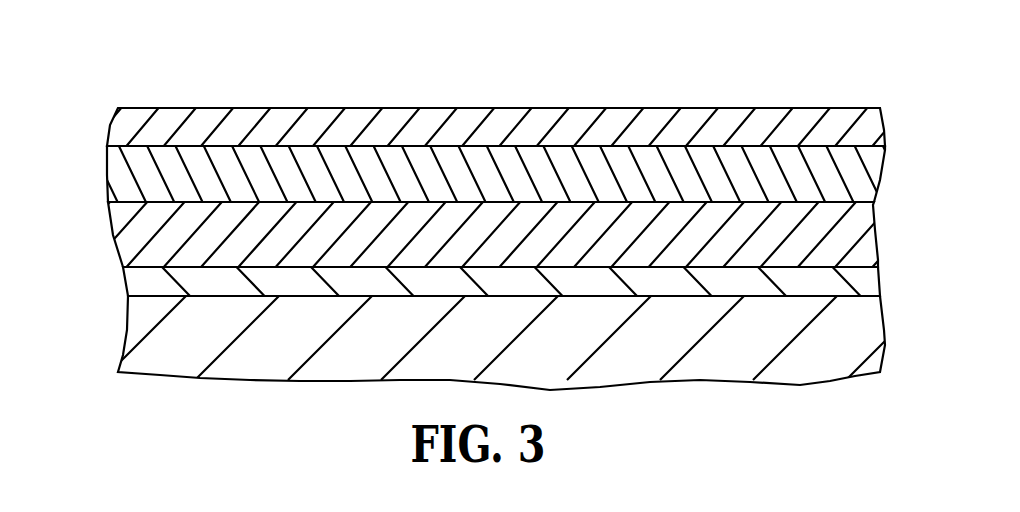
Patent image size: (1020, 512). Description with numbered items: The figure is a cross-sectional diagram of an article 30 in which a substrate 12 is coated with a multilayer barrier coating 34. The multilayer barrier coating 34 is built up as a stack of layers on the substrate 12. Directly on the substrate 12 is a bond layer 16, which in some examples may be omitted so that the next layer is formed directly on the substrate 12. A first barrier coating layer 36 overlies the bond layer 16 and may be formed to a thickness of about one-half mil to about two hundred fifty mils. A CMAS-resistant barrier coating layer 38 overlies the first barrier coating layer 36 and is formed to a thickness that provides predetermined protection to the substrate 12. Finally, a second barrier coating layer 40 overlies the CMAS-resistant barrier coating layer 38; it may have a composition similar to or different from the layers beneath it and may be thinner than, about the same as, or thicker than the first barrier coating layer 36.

The article 30 is at (77, 66).
The multilayer barrier coating 34 is at (907, 107).
The second barrier coating layer 40 is at (132, 128).
The CMAS-resistant barrier coating layer 38 is at (132, 175).
The first barrier coating layer 36 is at (132, 237).
The bond layer 16 is at (142, 284).
The substrate 12 is at (142, 334).